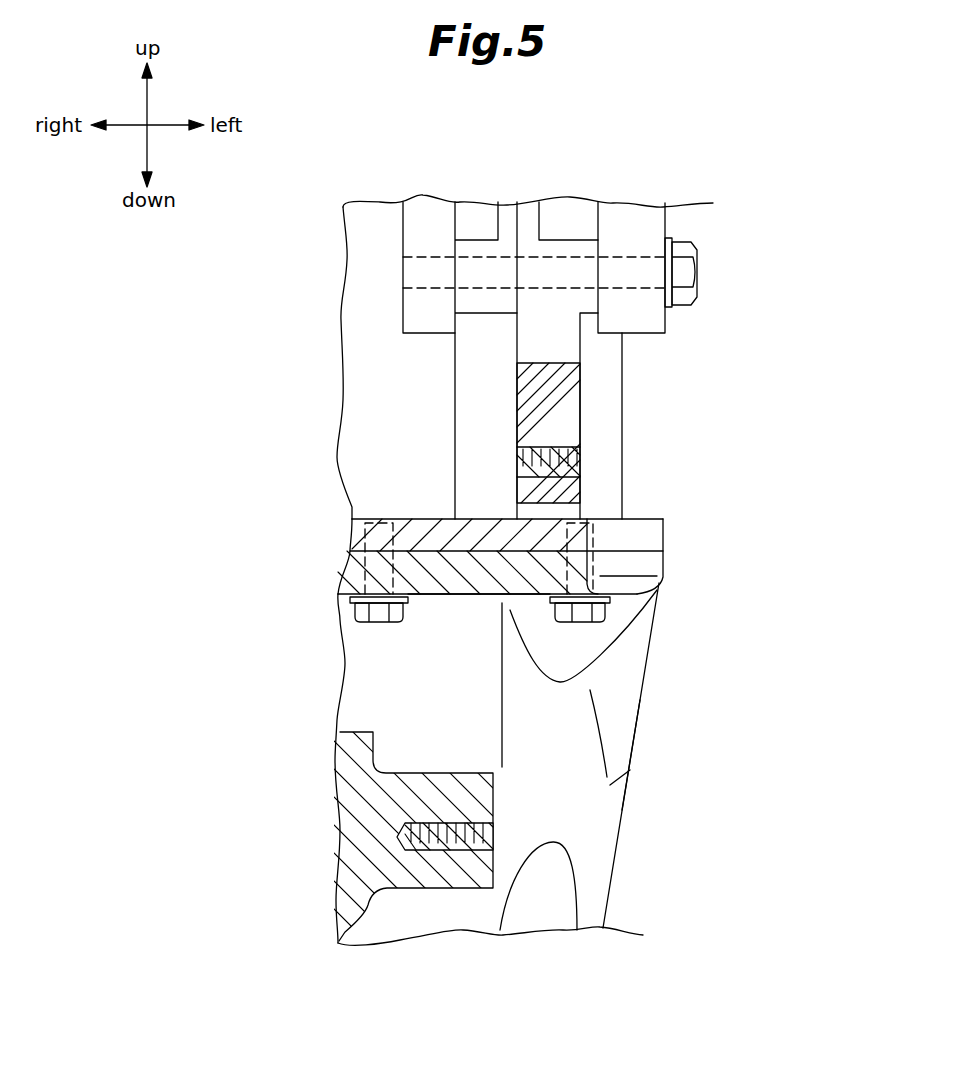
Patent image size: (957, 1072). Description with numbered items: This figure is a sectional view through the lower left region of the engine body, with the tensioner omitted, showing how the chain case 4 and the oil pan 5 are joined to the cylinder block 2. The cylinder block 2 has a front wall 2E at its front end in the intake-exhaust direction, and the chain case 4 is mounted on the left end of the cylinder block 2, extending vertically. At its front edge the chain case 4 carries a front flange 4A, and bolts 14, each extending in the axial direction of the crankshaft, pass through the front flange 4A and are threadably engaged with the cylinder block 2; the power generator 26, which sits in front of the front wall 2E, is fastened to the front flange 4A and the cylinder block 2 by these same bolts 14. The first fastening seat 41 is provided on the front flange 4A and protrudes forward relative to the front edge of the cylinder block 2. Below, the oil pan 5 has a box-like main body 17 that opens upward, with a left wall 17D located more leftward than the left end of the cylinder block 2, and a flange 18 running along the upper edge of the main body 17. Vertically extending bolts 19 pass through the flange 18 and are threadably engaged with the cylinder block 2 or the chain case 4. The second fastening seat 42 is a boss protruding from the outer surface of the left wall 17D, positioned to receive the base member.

The cylinder block 2 is at (343, 403).
The front wall 2E is at (352, 467).
The chain case 4 is at (563, 225).
The front flange 4A is at (527, 213).
The oil pan 5 is at (615, 850).
The bolt 14 is at (686, 273).
The main body 17 is at (612, 808).
The left wall 17D is at (623, 717).
The flange 18 is at (445, 603).
The bolt 19 is at (398, 624).
The power generator 26 is at (433, 212).
The first fastening seat 41 is at (578, 408).
The second fastening seat 42 is at (493, 868).